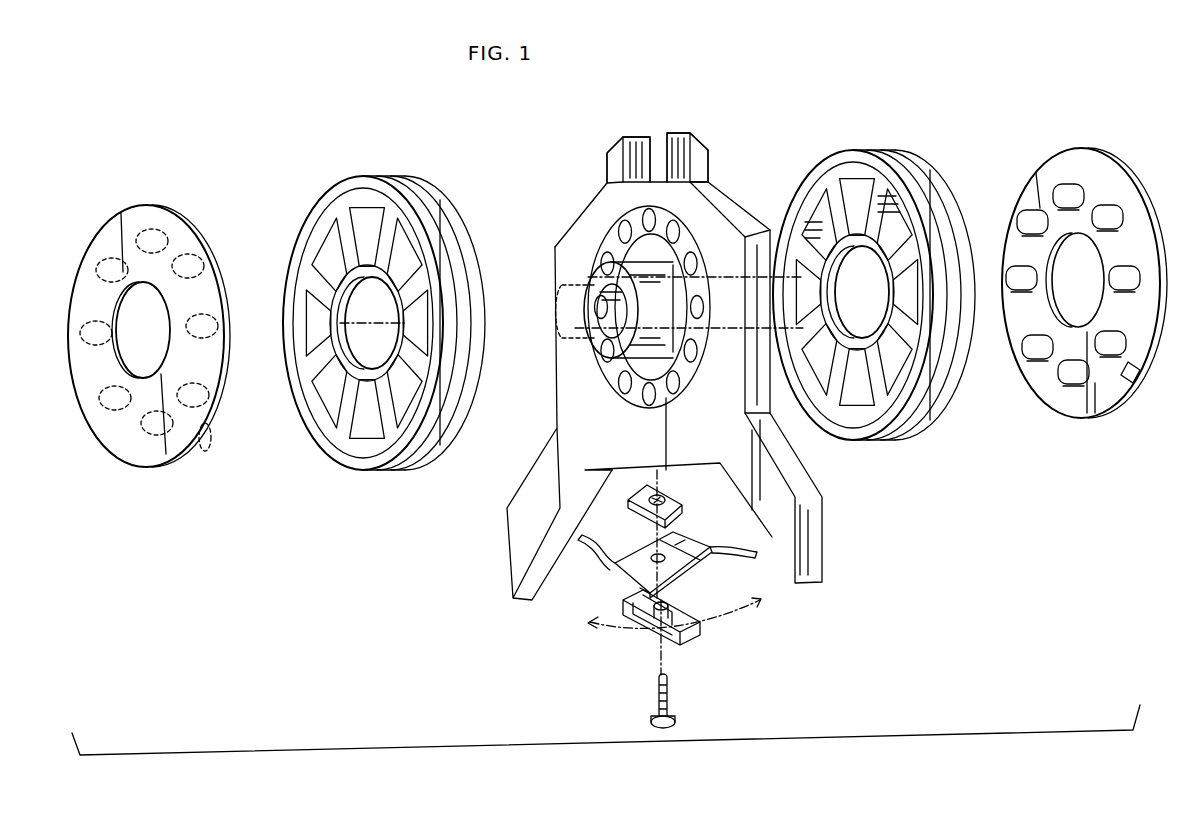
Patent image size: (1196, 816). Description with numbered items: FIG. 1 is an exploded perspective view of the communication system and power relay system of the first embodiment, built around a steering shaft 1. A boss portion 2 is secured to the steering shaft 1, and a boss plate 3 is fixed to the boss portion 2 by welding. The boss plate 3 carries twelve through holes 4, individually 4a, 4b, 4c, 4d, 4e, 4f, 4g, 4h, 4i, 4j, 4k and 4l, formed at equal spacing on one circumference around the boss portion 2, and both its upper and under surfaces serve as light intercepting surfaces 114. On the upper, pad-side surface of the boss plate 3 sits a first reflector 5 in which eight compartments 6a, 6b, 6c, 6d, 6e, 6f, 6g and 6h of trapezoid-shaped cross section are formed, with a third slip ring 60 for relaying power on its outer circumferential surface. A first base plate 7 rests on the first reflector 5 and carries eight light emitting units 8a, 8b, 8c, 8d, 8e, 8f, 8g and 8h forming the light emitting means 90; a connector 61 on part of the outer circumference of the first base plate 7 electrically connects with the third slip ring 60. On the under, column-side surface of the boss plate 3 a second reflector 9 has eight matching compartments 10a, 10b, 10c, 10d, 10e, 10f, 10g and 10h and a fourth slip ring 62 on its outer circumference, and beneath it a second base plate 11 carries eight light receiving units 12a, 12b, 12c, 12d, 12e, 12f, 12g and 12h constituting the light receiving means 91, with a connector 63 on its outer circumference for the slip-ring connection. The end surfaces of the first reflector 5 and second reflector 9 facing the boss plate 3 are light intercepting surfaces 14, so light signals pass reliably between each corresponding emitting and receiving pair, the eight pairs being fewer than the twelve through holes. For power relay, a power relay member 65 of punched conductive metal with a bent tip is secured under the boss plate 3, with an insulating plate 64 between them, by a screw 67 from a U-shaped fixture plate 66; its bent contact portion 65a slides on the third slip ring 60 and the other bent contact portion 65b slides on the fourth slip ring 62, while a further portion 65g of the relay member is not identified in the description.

The steering shaft 1 is at (770, 268).
The boss portion 2 is at (646, 264).
The boss plate 3 is at (664, 418).
The through holes 4 is at (648, 311).
The through hole 4a is at (648, 210).
The through hole 4b is at (676, 226).
The through hole 4c is at (694, 260).
The through hole 4d is at (702, 310).
The through hole 4e is at (695, 352).
The through hole 4f is at (678, 385).
The through hole 4g is at (650, 404).
The through hole 4h is at (622, 392).
The through hole 4i is at (603, 356).
The through hole 4j is at (598, 318).
The through hole 4k is at (600, 264).
The through hole 4l is at (619, 233).
The first reflector 5 is at (383, 322).
The compartment 6a is at (380, 206).
The compartment 6b is at (412, 240).
The compartment 6c is at (425, 322).
The compartment 6d is at (408, 420).
The compartment 6e is at (365, 440).
The compartment 6f is at (330, 420).
The compartment 6g is at (308, 302).
The compartment 6h is at (322, 240).
The first base plate 7 is at (123, 212).
The light emitting unit 8a is at (160, 229).
The light emitting unit 8b is at (205, 261).
The light emitting unit 8c is at (200, 318).
The light emitting unit 8d is at (192, 384).
The light emitting unit 8e is at (152, 434).
The light emitting unit 8f is at (108, 389).
The light emitting unit 8g is at (99, 323).
The light emitting unit 8h is at (100, 260).
The second reflector 9 is at (878, 292).
The compartment 10a is at (856, 177).
The compartment 10b is at (900, 212).
The compartment 10c is at (912, 290).
The compartment 10d is at (900, 370).
The compartment 10e is at (858, 406).
The compartment 10f is at (815, 385).
The compartment 10g is at (800, 330).
The compartment 10h is at (818, 215).
The second base plate 11 is at (1008, 124).
The light receiving unit 12a is at (1062, 182).
The light receiving unit 12b is at (1112, 204).
The light receiving unit 12c is at (1125, 265).
The light receiving unit 12d is at (1112, 357).
The light receiving unit 12e is at (1075, 387).
The light receiving unit 12f is at (1030, 358).
The light receiving unit 12g is at (1021, 266).
The light receiving unit 12h is at (1030, 212).
The light intercepting surface 14 is at (840, 182).
The third slip ring 60 is at (468, 292).
The connector 61 is at (206, 452).
The fourth slip ring 62 is at (958, 290).
The connector 63 is at (1136, 380).
The insulating plate 64 is at (671, 499).
The power relay member 65 is at (667, 563).
The bent contact portion 65a is at (598, 540).
The bent contact portion 65b is at (738, 548).
The bent portion 65g is at (630, 587).
The fixture plate 66 is at (686, 648).
The screw 67 is at (674, 700).
The light emitting means 90 is at (136, 132).
The light receiving means 91 is at (1052, 76).
The light intercepting surfaces 114 is at (666, 182).